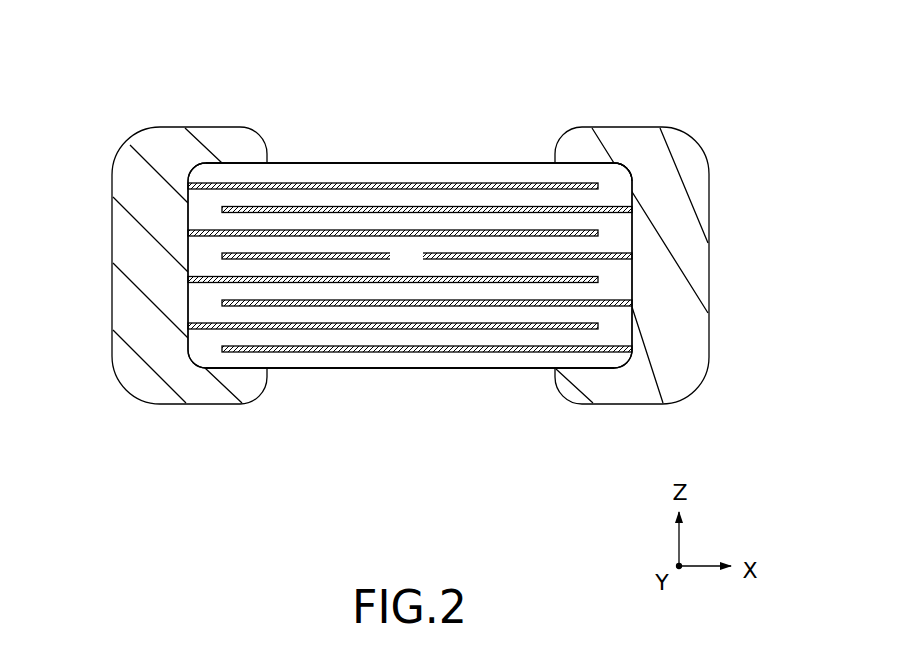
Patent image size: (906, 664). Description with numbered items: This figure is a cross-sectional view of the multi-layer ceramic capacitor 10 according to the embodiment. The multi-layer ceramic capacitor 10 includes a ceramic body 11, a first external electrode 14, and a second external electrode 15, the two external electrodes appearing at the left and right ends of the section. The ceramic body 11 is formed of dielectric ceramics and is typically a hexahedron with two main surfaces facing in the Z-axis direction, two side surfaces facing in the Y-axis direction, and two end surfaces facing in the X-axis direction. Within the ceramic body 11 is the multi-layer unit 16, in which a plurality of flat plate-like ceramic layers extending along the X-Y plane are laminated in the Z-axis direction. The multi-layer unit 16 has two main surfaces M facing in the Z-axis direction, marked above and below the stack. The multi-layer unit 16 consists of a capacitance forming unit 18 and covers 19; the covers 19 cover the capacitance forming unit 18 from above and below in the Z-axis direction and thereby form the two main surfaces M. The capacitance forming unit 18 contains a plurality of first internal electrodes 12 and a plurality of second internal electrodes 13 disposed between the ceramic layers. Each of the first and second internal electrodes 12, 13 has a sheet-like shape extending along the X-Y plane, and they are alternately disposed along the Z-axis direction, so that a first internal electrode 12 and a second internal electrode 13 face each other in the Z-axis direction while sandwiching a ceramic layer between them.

The multi-layer ceramic capacitor 10 is at (410, 226).
The ceramic body 11 is at (410, 235).
The first internal electrodes 12 is at (347, 187).
The second internal electrodes 13 is at (533, 208).
The first external electrode 14 is at (112, 267).
The second external electrode 15 is at (697, 262).
The multi-layer unit 16 is at (478, 127).
The capacitance forming unit 18 is at (410, 267).
The covers 19 is at (445, 175).
The main surfaces M is at (397, 163).